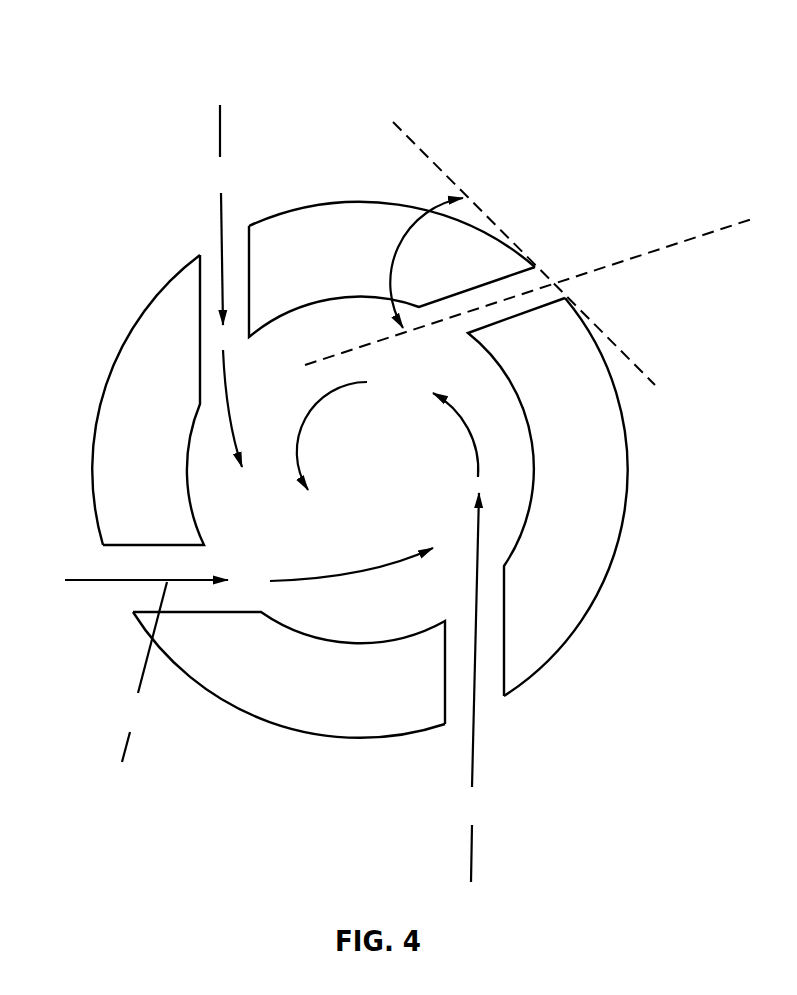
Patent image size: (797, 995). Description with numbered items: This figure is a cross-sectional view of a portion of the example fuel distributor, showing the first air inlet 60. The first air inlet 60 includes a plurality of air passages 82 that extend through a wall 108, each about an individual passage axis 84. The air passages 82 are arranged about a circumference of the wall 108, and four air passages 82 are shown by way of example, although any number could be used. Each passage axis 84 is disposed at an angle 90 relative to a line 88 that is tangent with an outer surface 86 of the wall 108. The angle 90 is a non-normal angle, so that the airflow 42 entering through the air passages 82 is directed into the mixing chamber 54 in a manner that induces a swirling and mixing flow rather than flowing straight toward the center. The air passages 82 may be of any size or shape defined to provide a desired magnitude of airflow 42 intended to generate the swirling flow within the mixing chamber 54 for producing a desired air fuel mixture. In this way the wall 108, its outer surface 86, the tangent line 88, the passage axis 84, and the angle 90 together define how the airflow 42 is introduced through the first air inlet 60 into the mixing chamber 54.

The first air inlet 60 is at (663, 48).
The airflow 42 is at (188, 172).
The mixing chamber 54 is at (375, 485).
The air passages 82 is at (212, 338).
The passage axis 84 is at (730, 227).
The outer surface 86 is at (628, 472).
The line 88 is at (409, 136).
The angle 90 is at (402, 258).
The wall 108 is at (318, 710).